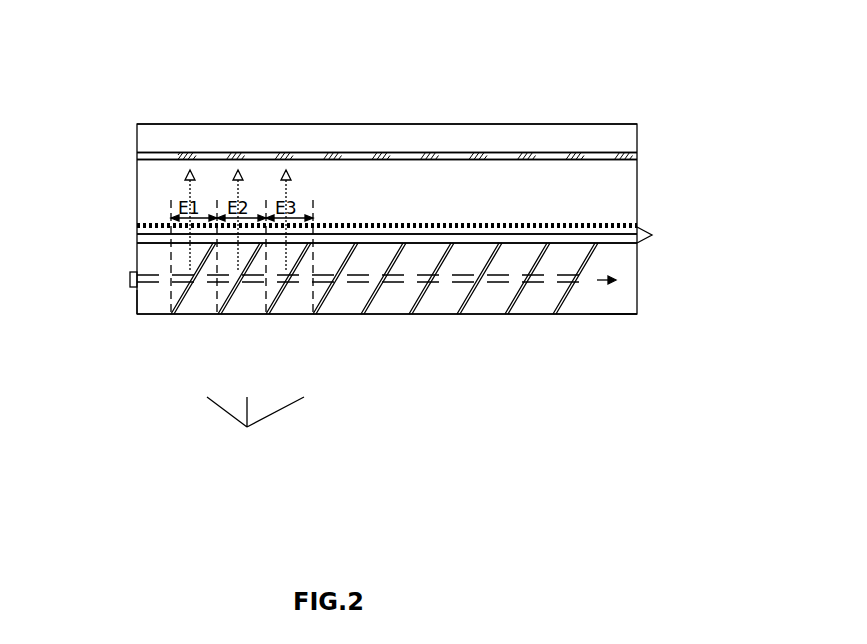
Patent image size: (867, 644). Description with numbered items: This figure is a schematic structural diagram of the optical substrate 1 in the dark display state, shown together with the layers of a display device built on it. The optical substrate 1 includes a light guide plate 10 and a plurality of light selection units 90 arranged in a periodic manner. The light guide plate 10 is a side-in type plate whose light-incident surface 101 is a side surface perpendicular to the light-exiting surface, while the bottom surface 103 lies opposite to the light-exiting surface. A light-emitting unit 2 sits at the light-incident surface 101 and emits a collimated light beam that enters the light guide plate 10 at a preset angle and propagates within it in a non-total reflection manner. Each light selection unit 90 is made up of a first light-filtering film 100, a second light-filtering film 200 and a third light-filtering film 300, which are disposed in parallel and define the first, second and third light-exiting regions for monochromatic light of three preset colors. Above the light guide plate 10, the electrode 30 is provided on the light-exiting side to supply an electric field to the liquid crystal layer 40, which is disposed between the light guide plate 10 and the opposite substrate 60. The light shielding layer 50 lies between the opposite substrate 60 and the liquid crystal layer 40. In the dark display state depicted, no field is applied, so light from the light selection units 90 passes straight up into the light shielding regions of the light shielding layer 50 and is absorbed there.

The optical substrate 1 is at (350, 302).
The light-emitting unit 2 is at (130, 273).
The light guide plate 10 is at (637, 292).
The electrode 30 is at (652, 234).
The liquid crystal layer 40 is at (637, 203).
The light shielding layer 50 is at (637, 155).
The opposite substrate 60 is at (553, 124).
The light selection unit 90 is at (255, 426).
The first light-filtering film 100 is at (182, 304).
The second light-filtering film 200 is at (228, 300).
The third light-filtering film 300 is at (278, 300).
The light-incident surface 101 is at (137, 303).
The bottom surface 103 is at (610, 315).